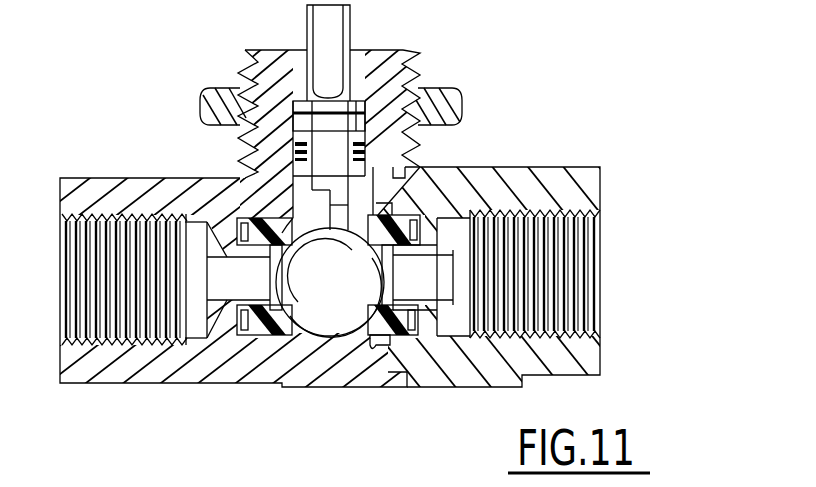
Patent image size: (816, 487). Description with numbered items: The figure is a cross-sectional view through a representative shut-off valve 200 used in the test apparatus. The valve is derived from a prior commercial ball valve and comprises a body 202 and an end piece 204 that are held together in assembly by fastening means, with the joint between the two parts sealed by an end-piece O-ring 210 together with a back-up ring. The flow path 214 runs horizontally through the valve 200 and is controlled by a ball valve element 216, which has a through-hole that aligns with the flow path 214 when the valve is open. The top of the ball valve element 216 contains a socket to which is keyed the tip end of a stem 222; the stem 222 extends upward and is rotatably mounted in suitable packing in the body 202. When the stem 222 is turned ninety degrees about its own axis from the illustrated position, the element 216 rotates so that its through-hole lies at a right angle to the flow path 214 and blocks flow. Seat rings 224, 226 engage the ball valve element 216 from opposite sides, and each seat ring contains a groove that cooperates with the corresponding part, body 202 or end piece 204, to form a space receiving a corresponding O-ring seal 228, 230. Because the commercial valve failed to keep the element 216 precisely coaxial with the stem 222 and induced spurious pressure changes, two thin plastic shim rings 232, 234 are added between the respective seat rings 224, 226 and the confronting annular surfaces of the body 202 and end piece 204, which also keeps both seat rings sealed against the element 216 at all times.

The shut-off valve 200 is at (610, 164).
The body 202 is at (118, 185).
The end piece 204 is at (517, 172).
The end-piece O-ring 210 is at (372, 345).
The flow path 214 is at (66, 256).
The ball valve element 216 is at (326, 322).
The stem 222 is at (350, 31).
The seat ring 224 is at (264, 344).
The seat ring 226 is at (360, 340).
The O-ring seal 228 is at (250, 228).
The O-ring seal 230 is at (412, 212).
The shim ring 232 is at (243, 338).
The shim ring 234 is at (440, 322).